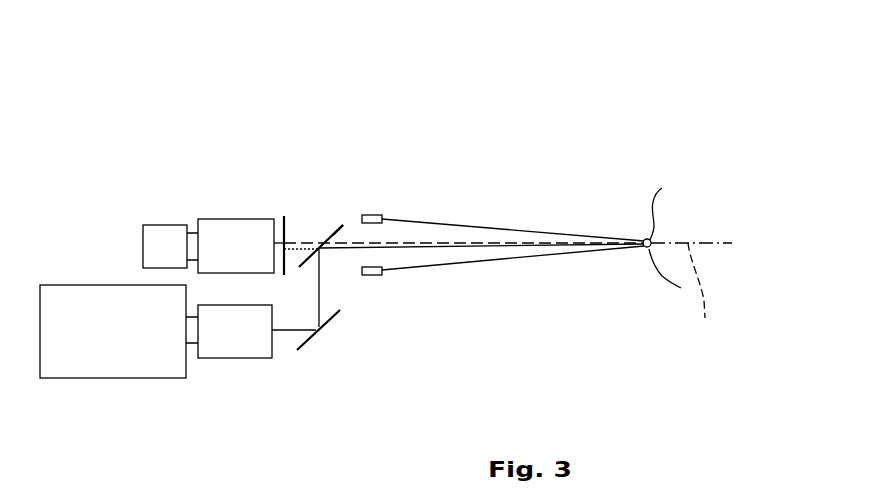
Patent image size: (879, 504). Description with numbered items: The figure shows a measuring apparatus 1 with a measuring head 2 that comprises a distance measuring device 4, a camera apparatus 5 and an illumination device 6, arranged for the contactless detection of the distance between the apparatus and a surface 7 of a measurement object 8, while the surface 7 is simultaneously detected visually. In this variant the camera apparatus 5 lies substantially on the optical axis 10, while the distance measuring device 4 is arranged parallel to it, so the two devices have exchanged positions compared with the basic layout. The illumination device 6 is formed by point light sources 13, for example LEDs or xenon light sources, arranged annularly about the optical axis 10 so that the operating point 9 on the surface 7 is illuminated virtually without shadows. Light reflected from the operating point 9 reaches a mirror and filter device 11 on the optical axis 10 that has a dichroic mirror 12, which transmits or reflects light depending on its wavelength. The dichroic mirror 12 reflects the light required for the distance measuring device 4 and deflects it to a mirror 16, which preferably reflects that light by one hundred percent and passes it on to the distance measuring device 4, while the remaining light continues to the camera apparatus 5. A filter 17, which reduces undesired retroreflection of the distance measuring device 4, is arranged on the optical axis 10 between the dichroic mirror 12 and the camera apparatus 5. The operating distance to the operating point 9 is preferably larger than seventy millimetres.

The measuring apparatus 1 is at (100, 145).
The measuring head 2 is at (222, 182).
The distance measuring device 4 is at (102, 363).
The camera apparatus 5 is at (165, 235).
The illumination device 6 is at (368, 206).
The surface 7 is at (653, 202).
The measurement object 8 is at (668, 229).
The operating point 9 is at (647, 248).
The optical axis 10 is at (705, 294).
The mirror and filter device 11 is at (307, 220).
The dichroic mirror 12 is at (342, 224).
The point light sources 13 is at (377, 217).
The mirror 16 is at (310, 347).
The filter 17 is at (285, 217).